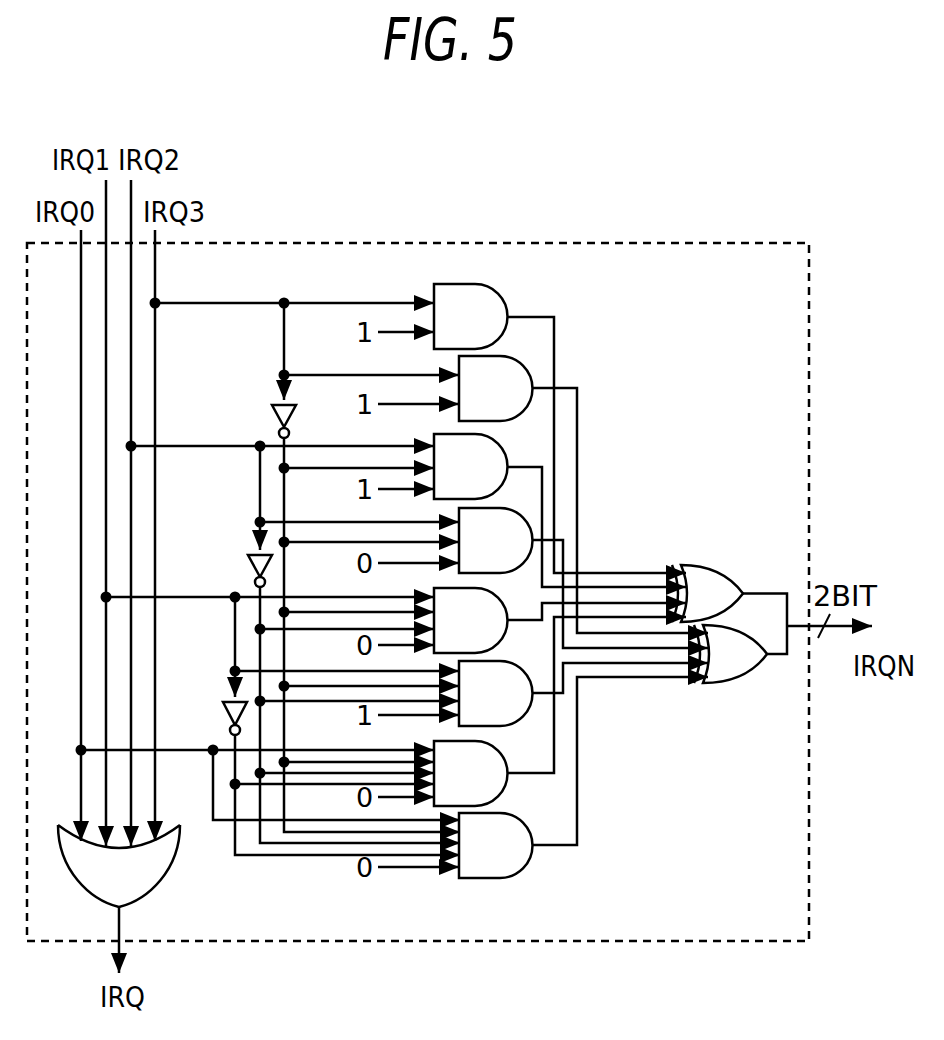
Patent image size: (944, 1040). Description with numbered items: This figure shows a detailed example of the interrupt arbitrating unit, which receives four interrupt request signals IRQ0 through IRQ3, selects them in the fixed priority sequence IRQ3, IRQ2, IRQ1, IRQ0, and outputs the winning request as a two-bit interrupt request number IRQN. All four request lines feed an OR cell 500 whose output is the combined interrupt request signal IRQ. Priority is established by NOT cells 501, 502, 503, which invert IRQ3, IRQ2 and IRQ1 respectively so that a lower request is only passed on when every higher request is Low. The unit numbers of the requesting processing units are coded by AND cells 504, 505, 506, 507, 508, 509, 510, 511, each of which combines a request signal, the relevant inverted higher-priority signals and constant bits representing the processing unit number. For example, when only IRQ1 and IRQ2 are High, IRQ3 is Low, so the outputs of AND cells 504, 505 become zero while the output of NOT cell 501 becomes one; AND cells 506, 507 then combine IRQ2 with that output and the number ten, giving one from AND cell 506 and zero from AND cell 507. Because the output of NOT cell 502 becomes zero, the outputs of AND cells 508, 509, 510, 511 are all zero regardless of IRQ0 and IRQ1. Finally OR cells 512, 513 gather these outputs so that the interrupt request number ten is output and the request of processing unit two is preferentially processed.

The OR cell 500 is at (165, 880).
The NOT cell 501 is at (272, 407).
The NOT cell 502 is at (248, 556).
The NOT cell 503 is at (225, 705).
The AND cell 504 is at (497, 291).
The AND cell 505 is at (522, 366).
The AND cell 506 is at (497, 441).
The AND cell 507 is at (522, 515).
The AND cell 508 is at (517, 648).
The AND cell 509 is at (517, 720).
The AND cell 510 is at (517, 798).
The AND cell 511 is at (520, 872).
The OR cell 512 is at (695, 568).
The OR cell 513 is at (712, 683).